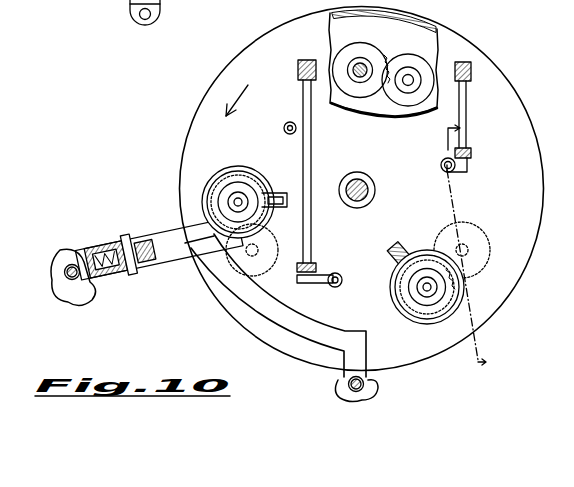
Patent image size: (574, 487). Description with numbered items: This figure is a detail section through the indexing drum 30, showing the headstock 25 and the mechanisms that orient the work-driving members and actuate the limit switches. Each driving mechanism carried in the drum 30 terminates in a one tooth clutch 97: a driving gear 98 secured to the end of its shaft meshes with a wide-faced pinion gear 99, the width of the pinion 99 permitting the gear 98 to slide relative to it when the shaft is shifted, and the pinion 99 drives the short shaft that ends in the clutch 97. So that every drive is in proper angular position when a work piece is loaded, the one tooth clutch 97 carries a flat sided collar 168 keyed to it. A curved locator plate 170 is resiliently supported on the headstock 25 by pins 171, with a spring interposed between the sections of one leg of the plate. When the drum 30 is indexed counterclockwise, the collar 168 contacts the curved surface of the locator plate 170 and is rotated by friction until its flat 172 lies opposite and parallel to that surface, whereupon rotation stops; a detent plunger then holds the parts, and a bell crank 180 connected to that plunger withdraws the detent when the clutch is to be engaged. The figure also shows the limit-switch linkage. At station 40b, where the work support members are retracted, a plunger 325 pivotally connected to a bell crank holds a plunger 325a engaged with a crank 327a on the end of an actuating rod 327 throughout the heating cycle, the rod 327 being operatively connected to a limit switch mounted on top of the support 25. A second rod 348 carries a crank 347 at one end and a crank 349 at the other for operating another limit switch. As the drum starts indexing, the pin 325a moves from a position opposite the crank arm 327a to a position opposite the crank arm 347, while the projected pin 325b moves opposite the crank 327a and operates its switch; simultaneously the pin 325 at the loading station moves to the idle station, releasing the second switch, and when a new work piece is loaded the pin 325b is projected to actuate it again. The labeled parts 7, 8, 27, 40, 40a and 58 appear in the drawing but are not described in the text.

The shaft 7 is at (4, 66).
The section line 8 is at (457, 253).
The headstock 25 is at (62, 256).
The central hub 27 is at (357, 171).
The drum 30 is at (225, 74).
The gear 40 is at (472, 238).
The gear 40a is at (361, 68).
The station 40b is at (250, 252).
The lever 58 is at (24, 3).
The one tooth clutch 97 is at (200, 227).
The driving gear 98 is at (342, 78).
The wide-faced pinion gear 99 is at (400, 63).
The flat sided collar 168 is at (234, 200).
The curved locator plate 170 is at (295, 320).
The pins 171 is at (60, 272).
The flat 172 is at (232, 208).
The bell crank 180 is at (286, 193).
The plunger 325 is at (440, 163).
The plunger 325a is at (343, 258).
The pin 325b is at (300, 128).
The actuating rod 327 is at (284, 127).
The crank 327a is at (218, 328).
The crank 347 is at (460, 172).
The rod 348 is at (463, 106).
The crank 349 is at (471, 66).